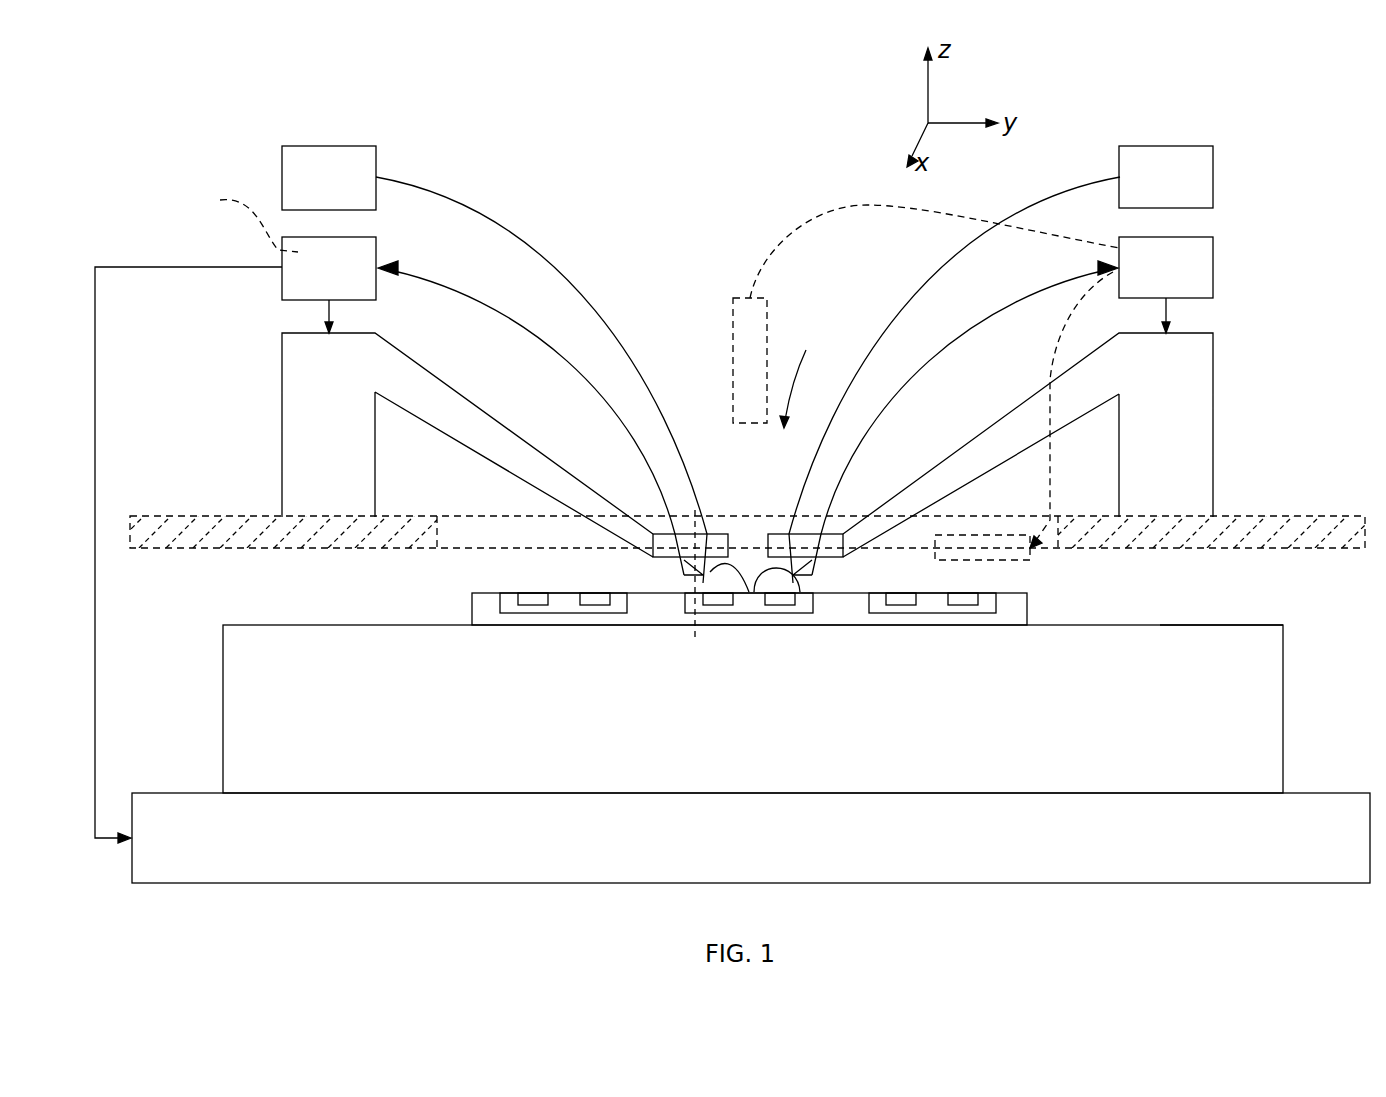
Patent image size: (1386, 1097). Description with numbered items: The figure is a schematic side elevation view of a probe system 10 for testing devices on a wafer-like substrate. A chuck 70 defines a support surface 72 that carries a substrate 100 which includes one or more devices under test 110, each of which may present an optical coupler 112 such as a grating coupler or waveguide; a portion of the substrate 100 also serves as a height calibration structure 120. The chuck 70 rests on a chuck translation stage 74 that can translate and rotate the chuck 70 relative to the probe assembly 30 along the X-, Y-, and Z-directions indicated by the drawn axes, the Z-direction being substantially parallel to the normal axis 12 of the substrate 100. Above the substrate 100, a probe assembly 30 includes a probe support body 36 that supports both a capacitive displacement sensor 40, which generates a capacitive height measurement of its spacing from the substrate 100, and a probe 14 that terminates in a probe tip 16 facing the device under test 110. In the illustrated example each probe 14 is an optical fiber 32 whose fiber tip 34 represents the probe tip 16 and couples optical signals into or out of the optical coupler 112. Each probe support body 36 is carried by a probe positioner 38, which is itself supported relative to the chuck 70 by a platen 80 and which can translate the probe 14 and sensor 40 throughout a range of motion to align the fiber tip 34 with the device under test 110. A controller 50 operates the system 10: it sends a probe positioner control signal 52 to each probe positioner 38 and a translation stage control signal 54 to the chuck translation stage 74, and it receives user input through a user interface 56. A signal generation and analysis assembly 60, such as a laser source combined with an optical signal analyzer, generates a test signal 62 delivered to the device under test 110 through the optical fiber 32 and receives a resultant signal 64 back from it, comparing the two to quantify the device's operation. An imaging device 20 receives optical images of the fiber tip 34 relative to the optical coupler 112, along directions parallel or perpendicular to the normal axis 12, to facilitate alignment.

The probe system 10 is at (229, 97).
The normal axis 12 is at (680, 604).
The probe 14 is at (768, 562).
The probe tip 16 is at (800, 592).
The imaging device 20 is at (730, 343).
The probe assembly 30 is at (805, 375).
The optical fiber 32 is at (683, 457).
The fiber tip 34 is at (749, 597).
The probe support body 36 is at (665, 535).
The probe positioner 38 is at (312, 426).
The capacitive displacement sensor 40 is at (682, 572).
The controller 50 is at (316, 282).
The probe positioner control signal 52 is at (328, 312).
The translation stage control signal 54 is at (95, 745).
The user interface 56 is at (240, 220).
The signal generation and analysis assembly 60 is at (316, 190).
The test signal 62 is at (528, 238).
The resultant signal 64 is at (937, 270).
The chuck 70 is at (734, 737).
The support surface 72 is at (1160, 625).
The chuck translation stage 74 is at (734, 854).
The platen 80 is at (1260, 516).
The substrate 100 is at (1032, 612).
The device under test 110 is at (510, 593).
The optical coupler 112 is at (717, 605).
The height calibration structure 120 is at (825, 590).